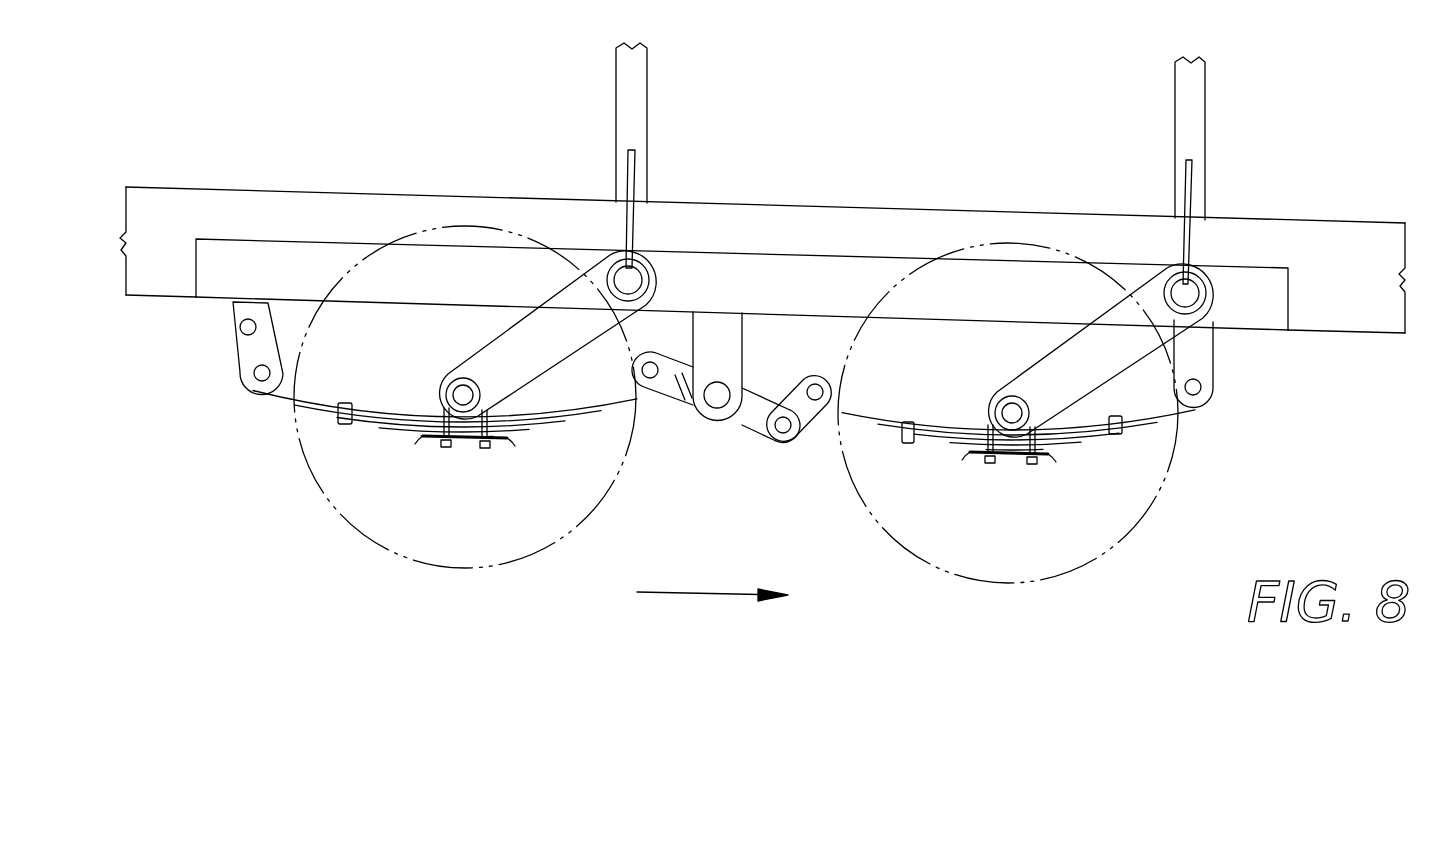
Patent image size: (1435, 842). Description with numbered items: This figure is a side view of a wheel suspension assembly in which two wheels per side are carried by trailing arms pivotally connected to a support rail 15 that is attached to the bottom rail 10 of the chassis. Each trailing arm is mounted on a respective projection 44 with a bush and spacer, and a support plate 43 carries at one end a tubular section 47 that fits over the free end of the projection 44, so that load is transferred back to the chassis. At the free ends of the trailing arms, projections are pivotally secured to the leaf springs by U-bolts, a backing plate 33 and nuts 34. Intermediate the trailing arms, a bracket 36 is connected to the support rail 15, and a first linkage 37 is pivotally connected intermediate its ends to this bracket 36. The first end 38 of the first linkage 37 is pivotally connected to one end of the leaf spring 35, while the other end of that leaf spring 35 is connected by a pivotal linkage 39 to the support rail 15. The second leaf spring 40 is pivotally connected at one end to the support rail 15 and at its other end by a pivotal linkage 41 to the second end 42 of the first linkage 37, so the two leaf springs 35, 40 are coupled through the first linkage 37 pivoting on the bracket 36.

The bottom rail 10 is at (292, 206).
The support rail 15 is at (226, 303).
The backing plate 33 is at (455, 443).
The nuts 34 is at (487, 442).
The leaf spring 35 is at (358, 425).
The bracket 36 is at (708, 365).
The first linkage 37 is at (742, 428).
The first end 38 is at (655, 375).
The pivotal linkage 39 is at (253, 352).
The second leaf spring 40 is at (1080, 445).
The pivotal linkage 41 is at (813, 428).
The second end 42 is at (785, 428).
The support plate 43 is at (632, 175).
The projection 44 is at (647, 286).
The tubular section 47 is at (640, 272).